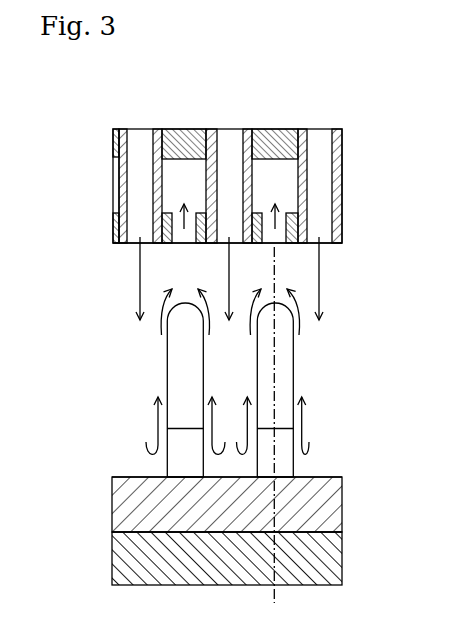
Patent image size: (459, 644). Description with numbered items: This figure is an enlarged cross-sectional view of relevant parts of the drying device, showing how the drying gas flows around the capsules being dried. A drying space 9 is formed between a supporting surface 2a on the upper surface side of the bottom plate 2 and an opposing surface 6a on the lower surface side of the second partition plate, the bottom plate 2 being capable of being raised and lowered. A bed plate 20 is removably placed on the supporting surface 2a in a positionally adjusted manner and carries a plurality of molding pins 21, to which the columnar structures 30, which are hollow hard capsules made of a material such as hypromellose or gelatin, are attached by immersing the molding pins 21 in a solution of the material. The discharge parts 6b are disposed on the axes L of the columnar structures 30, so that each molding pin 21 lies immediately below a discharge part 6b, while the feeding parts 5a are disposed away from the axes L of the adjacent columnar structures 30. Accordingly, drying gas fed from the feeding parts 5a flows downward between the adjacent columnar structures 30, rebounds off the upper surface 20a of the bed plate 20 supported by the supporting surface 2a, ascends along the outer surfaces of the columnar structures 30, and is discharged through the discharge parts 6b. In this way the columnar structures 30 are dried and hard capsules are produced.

The feeding part 5a is at (249, 183).
The discharge part 6b is at (193, 220).
The opposing surface 6a is at (115, 243).
The drying space 9 is at (148, 371).
The columnar structure 30 is at (189, 372).
The molding pin 21 is at (258, 477).
The upper surface of the bed plate 20a is at (318, 477).
The bed plate 20 is at (332, 500).
The supporting surface 2a is at (142, 532).
The bottom plate 2 is at (332, 560).
The axis of the columnar structure L is at (277, 600).